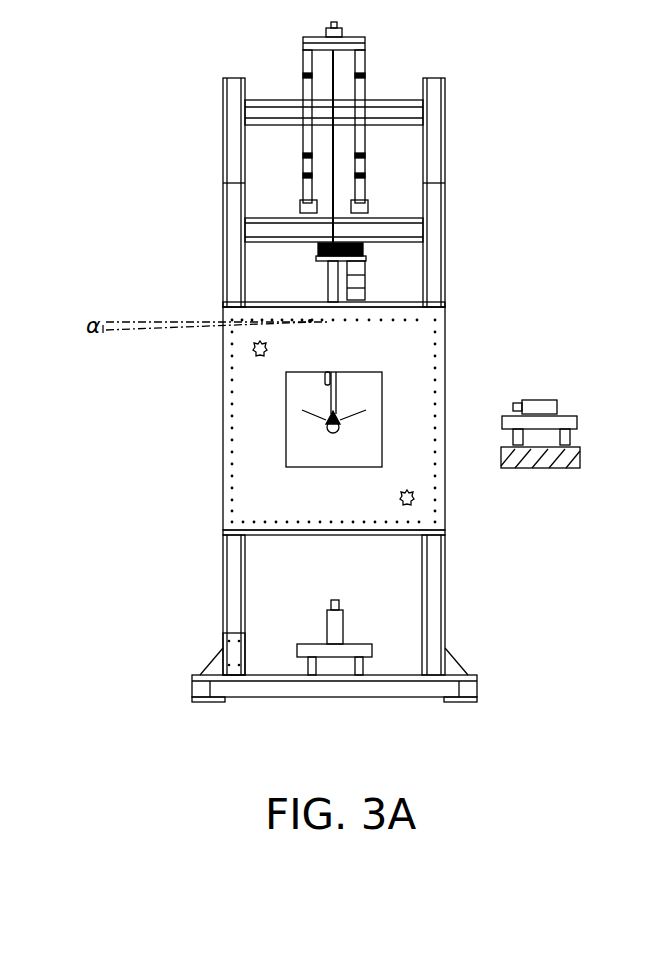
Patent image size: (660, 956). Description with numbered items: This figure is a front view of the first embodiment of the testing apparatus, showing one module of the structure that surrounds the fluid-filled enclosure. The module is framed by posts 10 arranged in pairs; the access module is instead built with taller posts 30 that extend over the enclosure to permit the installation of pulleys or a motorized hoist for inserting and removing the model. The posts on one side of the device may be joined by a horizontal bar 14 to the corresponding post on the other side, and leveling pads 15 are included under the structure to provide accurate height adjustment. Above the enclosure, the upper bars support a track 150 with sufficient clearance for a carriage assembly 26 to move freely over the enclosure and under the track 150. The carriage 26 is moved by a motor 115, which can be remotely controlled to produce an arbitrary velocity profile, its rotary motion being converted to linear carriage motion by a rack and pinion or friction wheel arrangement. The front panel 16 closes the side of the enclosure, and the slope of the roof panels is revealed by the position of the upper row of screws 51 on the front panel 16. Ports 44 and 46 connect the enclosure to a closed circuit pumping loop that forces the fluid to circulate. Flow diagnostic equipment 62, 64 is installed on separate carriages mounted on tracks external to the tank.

The post 10 is at (433, 605).
The horizontal bar 14 is at (266, 686).
The leveling pad 15 is at (200, 672).
The front panel 16 is at (399, 460).
The carriage assembly 26 is at (355, 252).
The post 30 is at (435, 168).
The port 44 is at (413, 498).
The port 46 is at (252, 349).
The upper row of screws 51 is at (310, 322).
The flow diagnostic equipment 62 is at (548, 411).
The flow diagnostic equipment 64 is at (345, 638).
The motor 115 is at (362, 282).
The track 150 is at (320, 243).